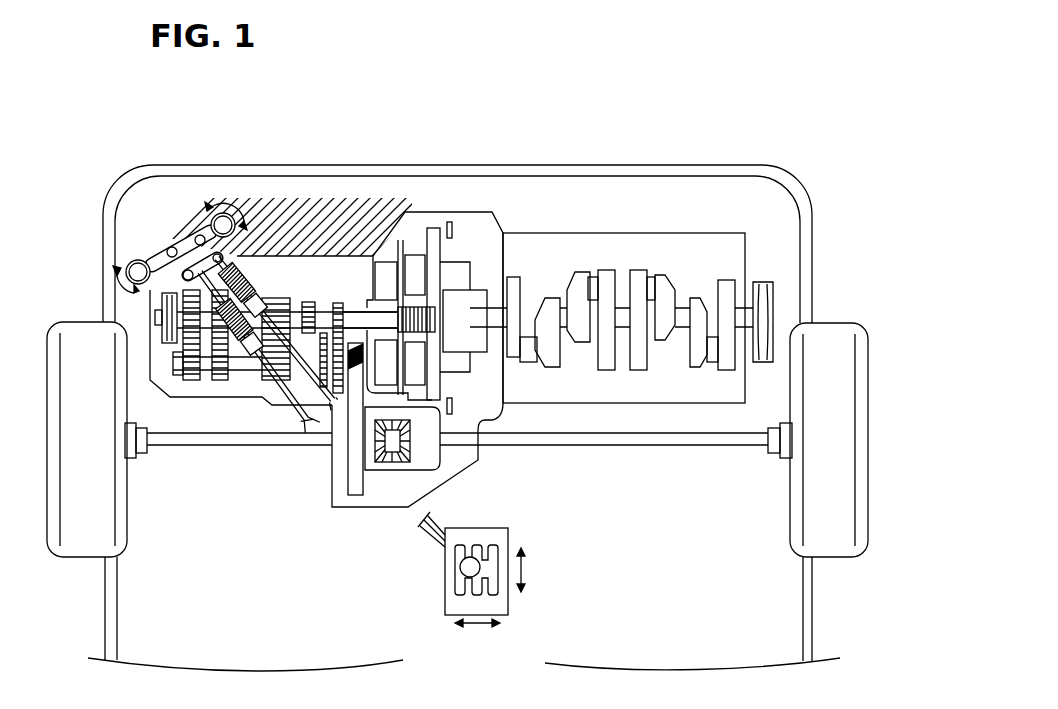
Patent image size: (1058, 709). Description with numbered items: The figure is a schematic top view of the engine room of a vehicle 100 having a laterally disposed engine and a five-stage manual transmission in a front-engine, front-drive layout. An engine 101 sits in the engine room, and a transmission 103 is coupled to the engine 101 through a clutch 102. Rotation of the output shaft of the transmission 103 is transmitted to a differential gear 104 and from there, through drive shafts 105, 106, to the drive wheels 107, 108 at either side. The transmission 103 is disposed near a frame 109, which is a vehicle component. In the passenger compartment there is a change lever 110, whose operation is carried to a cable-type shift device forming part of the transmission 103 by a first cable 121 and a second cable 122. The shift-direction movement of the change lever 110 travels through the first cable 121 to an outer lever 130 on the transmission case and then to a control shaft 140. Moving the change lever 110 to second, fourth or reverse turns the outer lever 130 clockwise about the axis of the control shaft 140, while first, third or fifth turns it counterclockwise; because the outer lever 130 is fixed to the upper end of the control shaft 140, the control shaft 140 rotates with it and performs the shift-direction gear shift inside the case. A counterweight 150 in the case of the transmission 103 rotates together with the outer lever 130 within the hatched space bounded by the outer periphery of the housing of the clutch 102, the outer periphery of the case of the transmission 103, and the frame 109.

The vehicle 100 is at (781, 151).
The engine 101 is at (622, 243).
The clutch 102 is at (472, 225).
The transmission 103 is at (343, 268).
The differential gear 104 is at (355, 500).
The drive shaft 105 is at (208, 448).
The drive shaft 106 is at (633, 447).
The drive wheel 107 is at (80, 548).
The drive wheel 108 is at (839, 548).
The frame 109 is at (105, 222).
The change lever 110 is at (497, 523).
The first cable 121 is at (295, 297).
The second cable 122 is at (283, 430).
The outer lever 130 is at (252, 224).
The control shaft 140 is at (128, 263).
The counterweight 150 is at (162, 224).